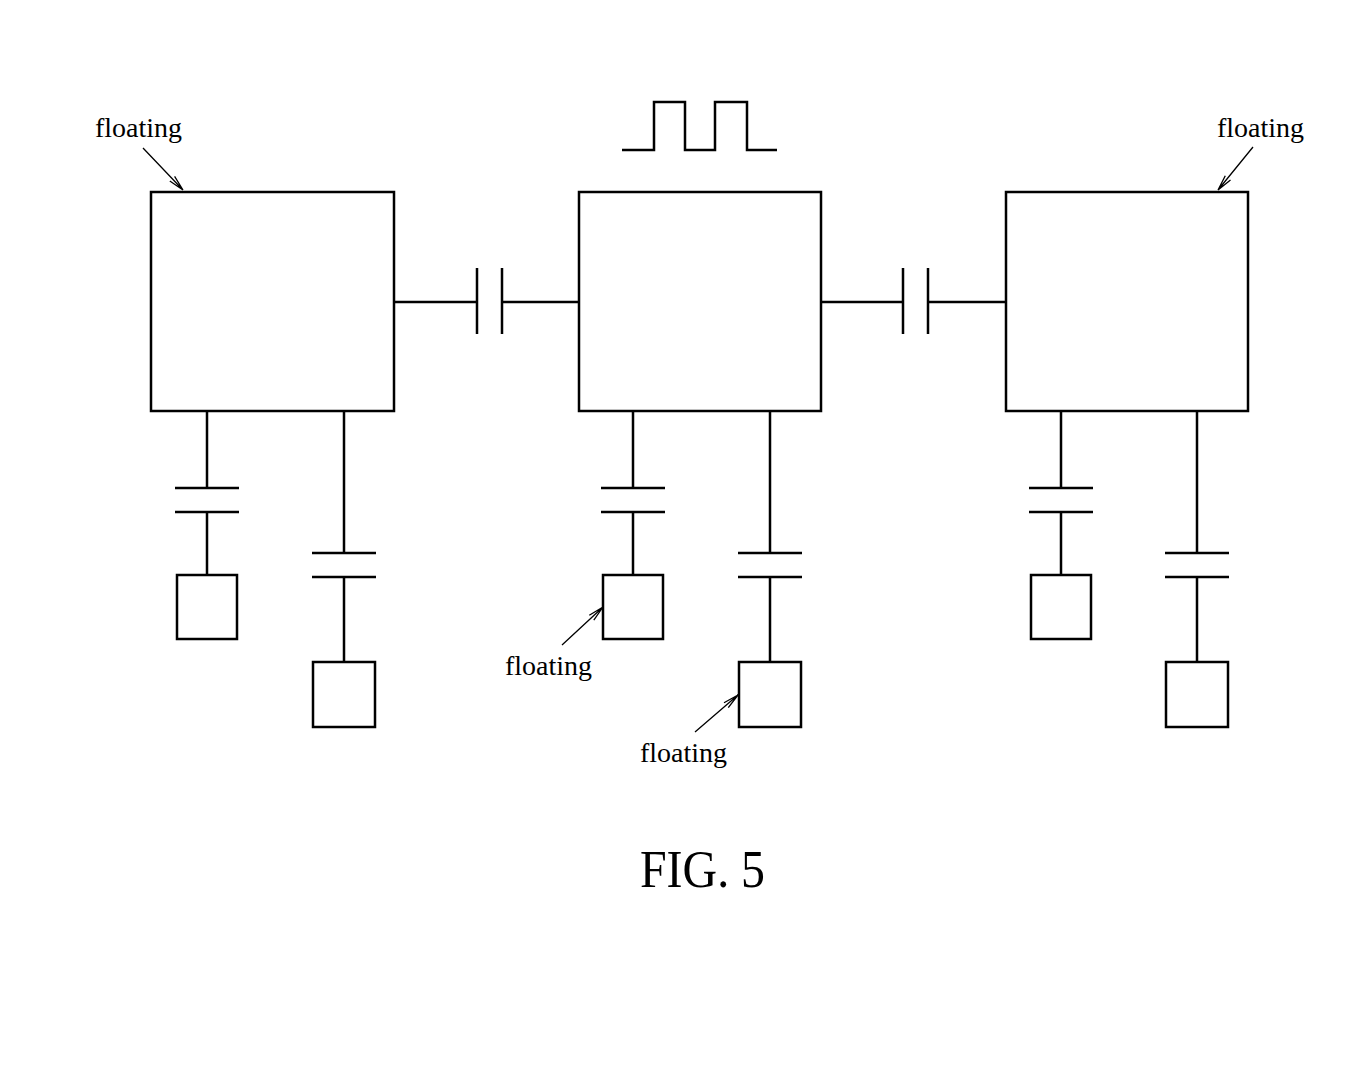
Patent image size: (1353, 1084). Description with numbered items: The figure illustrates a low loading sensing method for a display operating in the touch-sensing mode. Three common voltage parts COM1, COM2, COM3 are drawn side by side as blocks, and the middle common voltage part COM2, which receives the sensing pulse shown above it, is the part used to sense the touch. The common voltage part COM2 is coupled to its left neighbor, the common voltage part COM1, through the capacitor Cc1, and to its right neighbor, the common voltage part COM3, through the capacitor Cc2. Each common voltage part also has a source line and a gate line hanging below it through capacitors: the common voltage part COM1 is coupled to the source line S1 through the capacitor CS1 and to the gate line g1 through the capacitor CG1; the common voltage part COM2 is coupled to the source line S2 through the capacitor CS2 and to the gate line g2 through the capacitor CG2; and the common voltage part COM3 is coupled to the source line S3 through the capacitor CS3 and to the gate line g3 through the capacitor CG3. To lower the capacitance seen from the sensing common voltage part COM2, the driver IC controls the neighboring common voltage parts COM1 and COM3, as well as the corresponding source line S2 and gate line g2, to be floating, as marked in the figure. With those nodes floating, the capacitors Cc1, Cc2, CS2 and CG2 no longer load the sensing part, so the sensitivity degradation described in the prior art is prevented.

The common voltage part COM1 is at (272, 301).
The common voltage part COM2 is at (700, 301).
The common voltage part COM3 is at (1127, 301).
The capacitor Cc1 is at (486, 274).
The capacitor Cc2 is at (913, 274).
The capacitor CS1 is at (233, 493).
The capacitor CS2 is at (659, 493).
The capacitor CS3 is at (1087, 493).
The capacitor CG1 is at (370, 536).
The capacitor CG2 is at (796, 536).
The capacitor CG3 is at (1223, 536).
The source line S1 is at (207, 607).
The source line S2 is at (633, 607).
The source line S3 is at (1061, 607).
The gate line g1 is at (344, 694).
The gate line g2 is at (770, 694).
The gate line g3 is at (1197, 694).